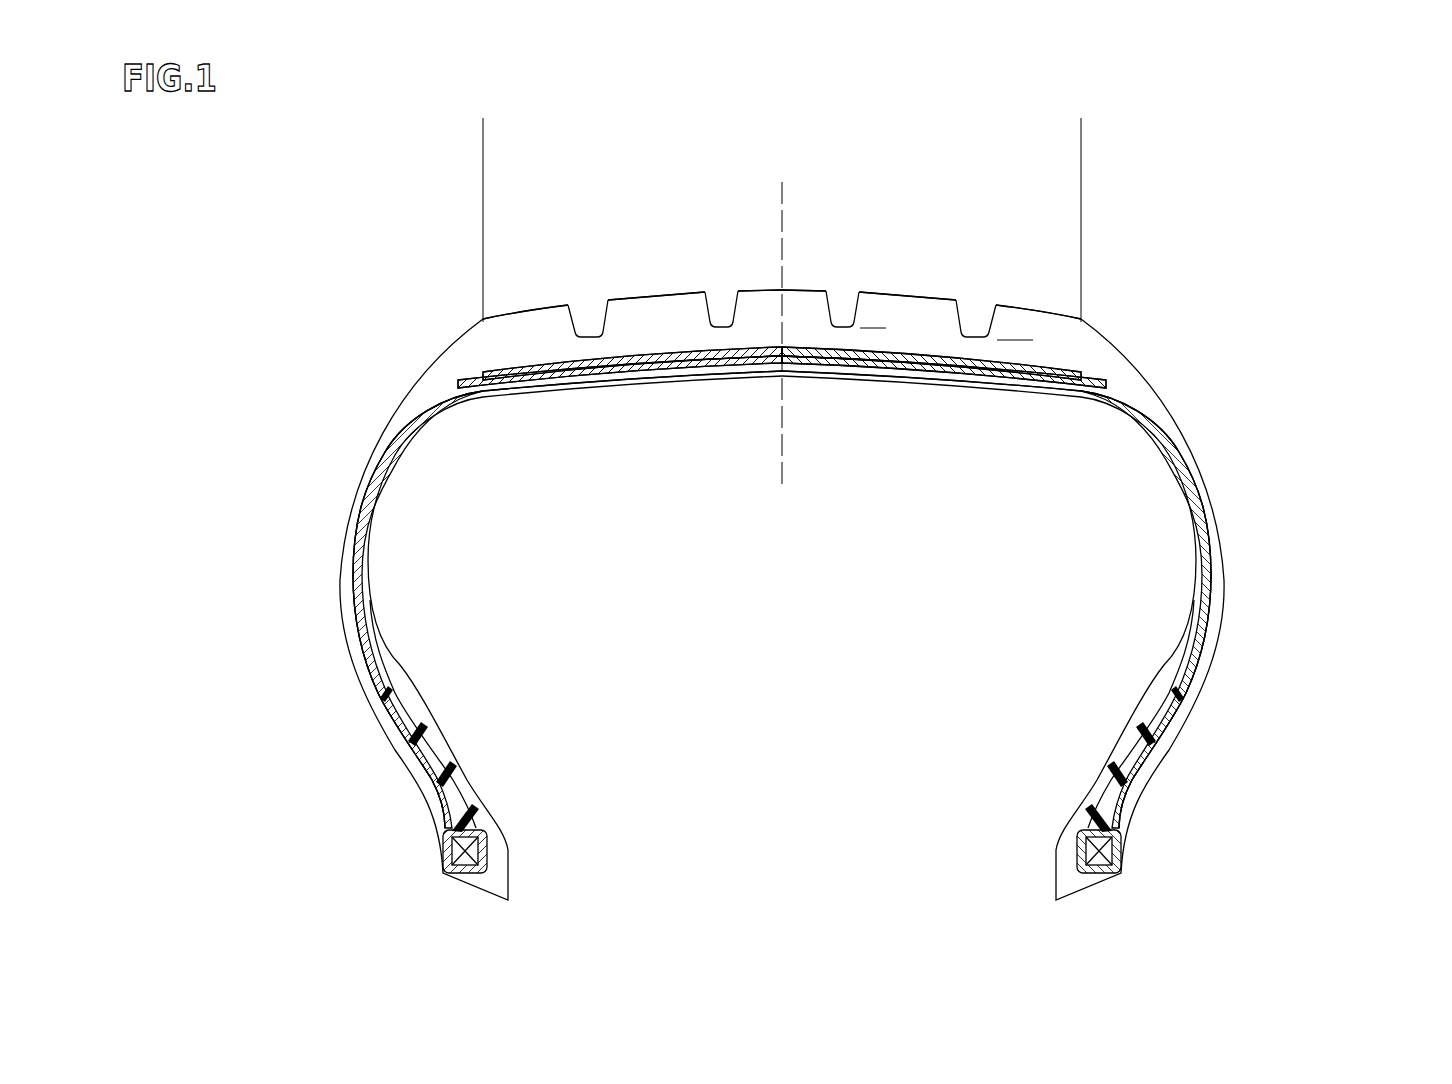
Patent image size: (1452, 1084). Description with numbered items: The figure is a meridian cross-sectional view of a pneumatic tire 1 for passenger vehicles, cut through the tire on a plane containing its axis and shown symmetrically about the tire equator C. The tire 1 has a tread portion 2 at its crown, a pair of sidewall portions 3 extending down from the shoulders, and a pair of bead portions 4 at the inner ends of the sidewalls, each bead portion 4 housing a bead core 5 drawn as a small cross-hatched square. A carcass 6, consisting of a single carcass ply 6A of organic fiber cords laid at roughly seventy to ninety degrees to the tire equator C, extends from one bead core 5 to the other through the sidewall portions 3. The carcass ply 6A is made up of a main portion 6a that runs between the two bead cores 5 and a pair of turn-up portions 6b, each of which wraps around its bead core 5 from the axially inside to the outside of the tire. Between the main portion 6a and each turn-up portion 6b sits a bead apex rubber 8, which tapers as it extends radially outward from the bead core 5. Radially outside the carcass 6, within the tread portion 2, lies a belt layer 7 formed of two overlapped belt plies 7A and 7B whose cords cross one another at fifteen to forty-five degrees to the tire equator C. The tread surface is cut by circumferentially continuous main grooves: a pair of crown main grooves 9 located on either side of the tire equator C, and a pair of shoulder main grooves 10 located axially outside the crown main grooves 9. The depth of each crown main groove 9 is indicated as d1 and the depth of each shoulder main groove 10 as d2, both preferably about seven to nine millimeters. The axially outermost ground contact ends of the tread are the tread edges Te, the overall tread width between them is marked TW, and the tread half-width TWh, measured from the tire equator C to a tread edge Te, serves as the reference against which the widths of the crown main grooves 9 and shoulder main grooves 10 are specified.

The pneumatic tire 1 is at (1173, 298).
The tread portion 2 is at (812, 279).
The sidewall portion 3 is at (309, 553).
The bead portion 4 is at (410, 839).
The bead core 5 is at (452, 853).
The carcass 6 is at (1033, 570).
The carcass ply 6A is at (782, 599).
The main portion 6a is at (1203, 598).
The turn-up portion 6b is at (1198, 636).
The belt layer 7 is at (893, 465).
The belt ply 7A is at (978, 355).
The belt ply 7B is at (918, 362).
The bead apex rubber 8 is at (428, 747).
The crown main groove 9 is at (722, 306).
The shoulder main groove 10 is at (587, 320).
The tread edge Te is at (483, 298).
The tread width TW is at (483, 123).
The tread half-width TWh is at (483, 195).
The tire equator C is at (782, 319).
The groove depth of crown main groove d1 is at (877, 348).
The groove depth of shoulder main groove d2 is at (1020, 377).